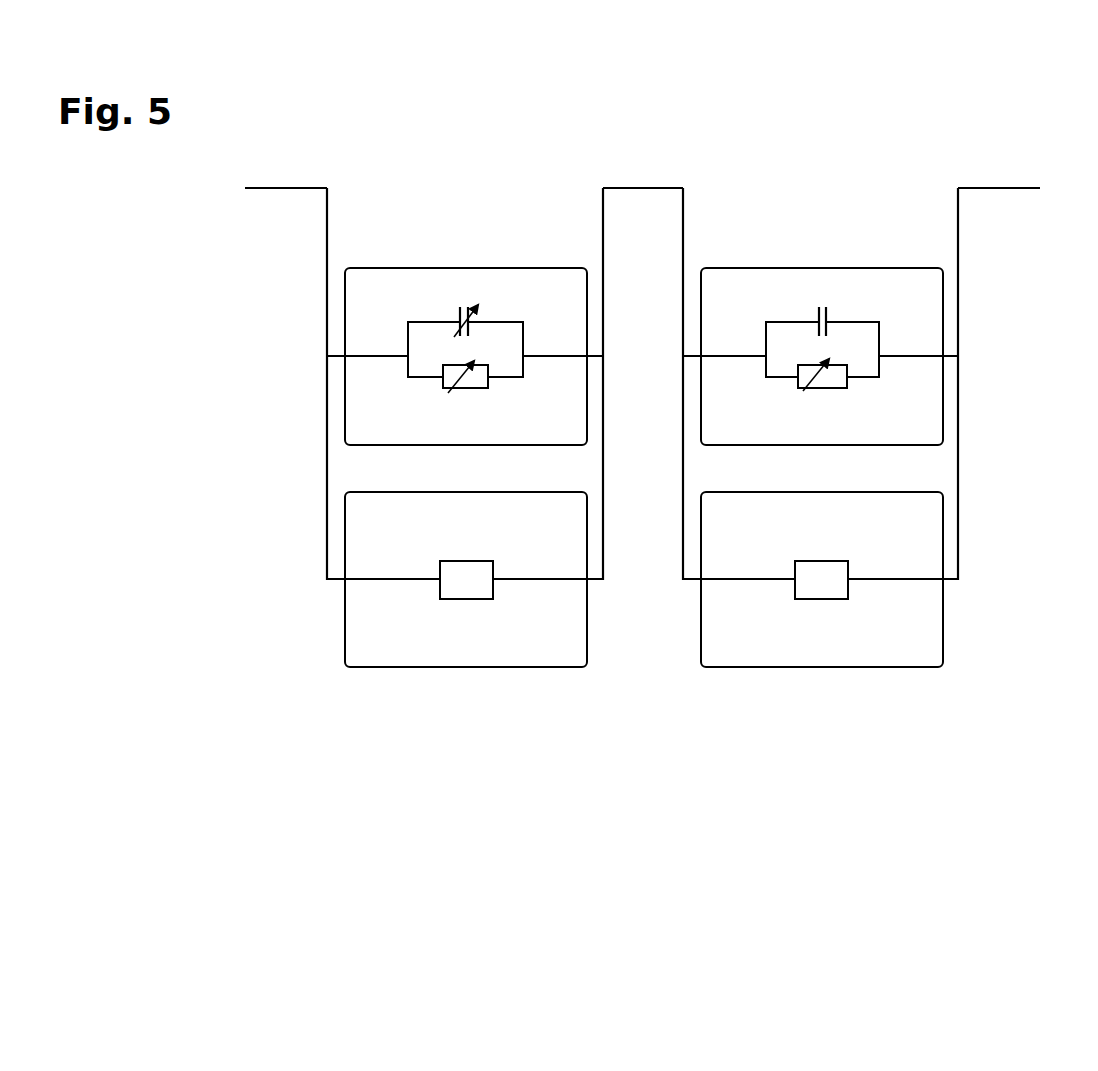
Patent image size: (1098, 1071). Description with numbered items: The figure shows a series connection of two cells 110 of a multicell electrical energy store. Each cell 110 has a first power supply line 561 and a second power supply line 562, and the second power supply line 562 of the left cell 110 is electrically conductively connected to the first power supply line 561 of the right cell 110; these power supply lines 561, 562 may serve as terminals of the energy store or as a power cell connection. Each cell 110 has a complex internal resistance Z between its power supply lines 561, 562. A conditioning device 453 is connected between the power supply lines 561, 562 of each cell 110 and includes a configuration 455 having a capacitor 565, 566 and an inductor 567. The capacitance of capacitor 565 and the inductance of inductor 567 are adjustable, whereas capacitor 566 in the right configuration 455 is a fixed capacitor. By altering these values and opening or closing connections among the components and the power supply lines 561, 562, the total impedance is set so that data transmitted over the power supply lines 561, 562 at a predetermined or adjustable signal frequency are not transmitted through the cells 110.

The cell 110 is at (465, 667).
The conditioning device 453 is at (468, 268).
The configuration 455 is at (541, 340).
The first power supply line 561 is at (327, 472).
The second power supply line 562 is at (604, 475).
The capacitor 565 is at (459, 312).
The capacitor 566 is at (832, 312).
The inductor 567 is at (478, 385).